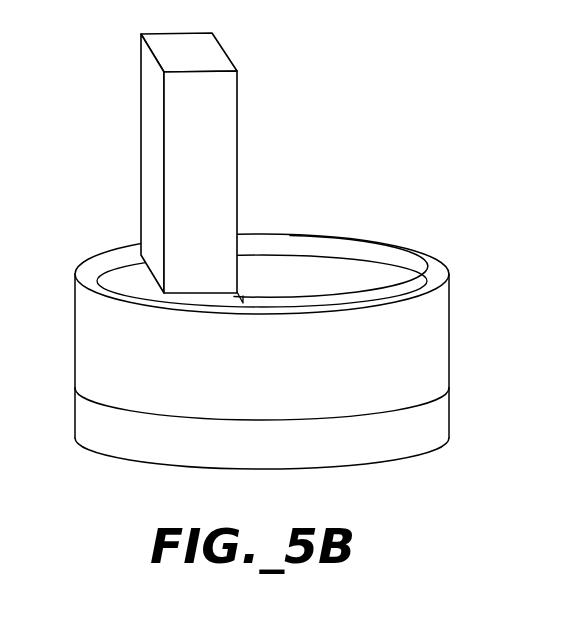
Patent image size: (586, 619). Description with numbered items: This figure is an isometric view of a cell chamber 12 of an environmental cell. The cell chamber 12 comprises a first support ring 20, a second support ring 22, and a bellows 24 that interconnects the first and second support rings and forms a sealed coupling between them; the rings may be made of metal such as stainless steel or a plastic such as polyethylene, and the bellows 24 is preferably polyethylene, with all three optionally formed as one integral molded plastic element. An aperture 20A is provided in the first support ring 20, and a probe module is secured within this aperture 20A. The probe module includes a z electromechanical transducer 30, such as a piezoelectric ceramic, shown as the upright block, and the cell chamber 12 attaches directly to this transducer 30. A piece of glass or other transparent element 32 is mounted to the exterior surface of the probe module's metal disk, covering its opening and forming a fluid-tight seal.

The cell chamber 12 is at (356, 124).
The first support ring 20 is at (284, 334).
The aperture 20A is at (130, 273).
The second support ring 22 is at (442, 428).
The bellows 24 is at (442, 357).
The z electromechanical transducer 30 is at (223, 162).
The transparent element 32 is at (307, 245).